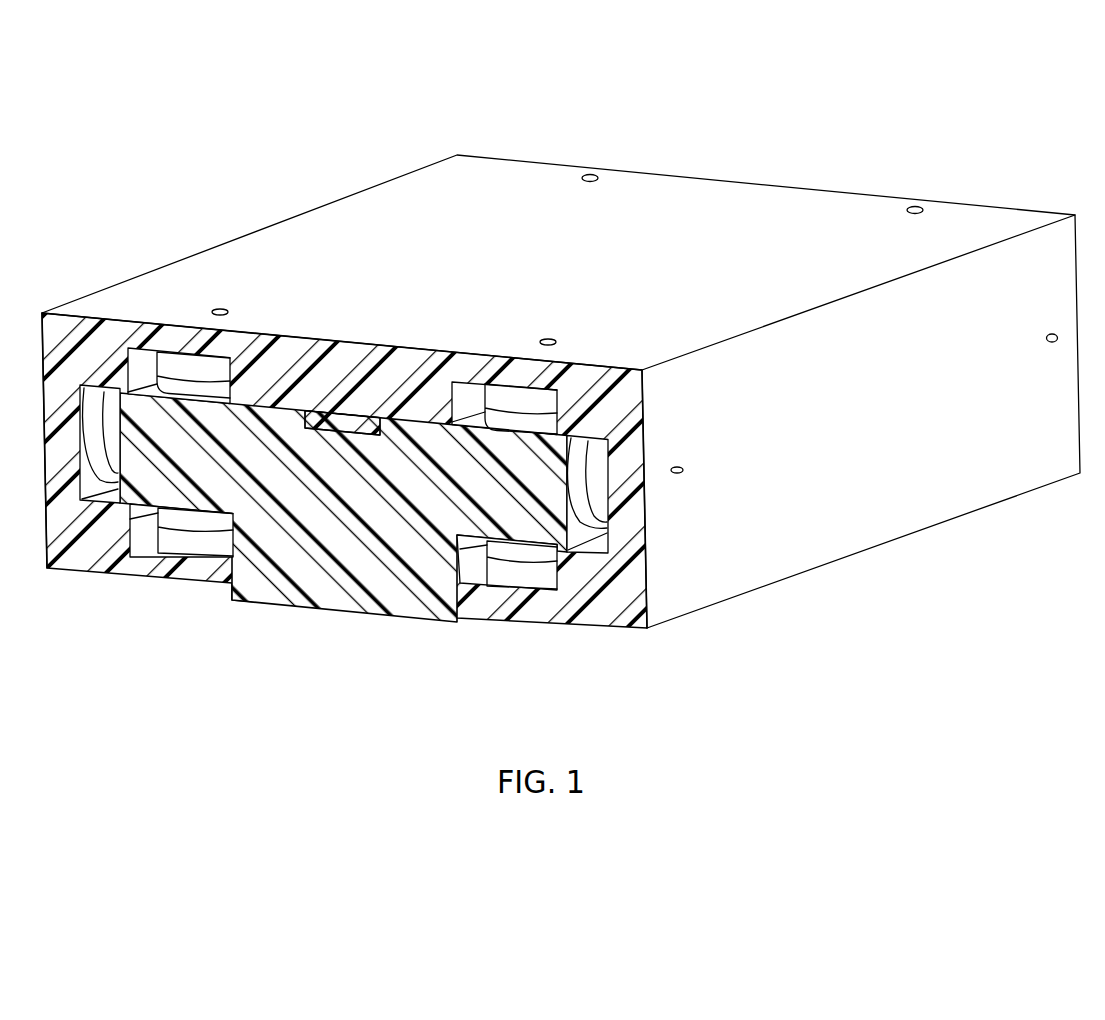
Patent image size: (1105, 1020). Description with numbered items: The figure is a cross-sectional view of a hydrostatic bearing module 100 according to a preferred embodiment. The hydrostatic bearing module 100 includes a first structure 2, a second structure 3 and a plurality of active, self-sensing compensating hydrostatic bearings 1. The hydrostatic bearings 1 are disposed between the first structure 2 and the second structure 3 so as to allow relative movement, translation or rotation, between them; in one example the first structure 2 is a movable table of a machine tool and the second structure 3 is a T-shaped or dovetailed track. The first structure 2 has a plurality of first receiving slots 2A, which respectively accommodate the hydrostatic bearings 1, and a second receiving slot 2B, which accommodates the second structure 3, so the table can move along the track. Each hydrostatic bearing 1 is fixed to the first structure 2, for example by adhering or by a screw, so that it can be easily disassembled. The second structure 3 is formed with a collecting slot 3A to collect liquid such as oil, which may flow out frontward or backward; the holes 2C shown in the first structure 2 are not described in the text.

The hydrostatic bearing module 100 is at (630, 125).
The active compensating hydrostatic bearing 1 is at (187, 368).
The first structure 2 is at (585, 373).
The first receiving slot 2A is at (148, 362).
The second receiving slot 2B is at (342, 423).
The mounting hole 2C is at (227, 307).
The second structure 3 is at (343, 583).
The collecting slot 3A is at (349, 426).